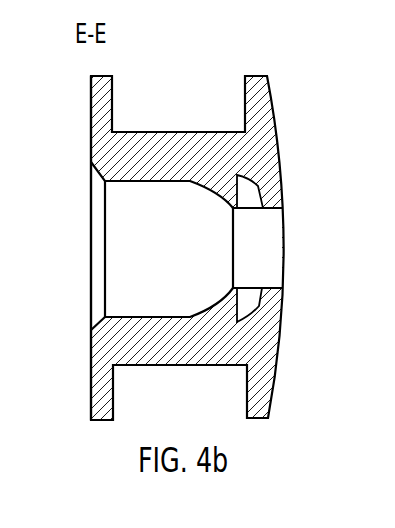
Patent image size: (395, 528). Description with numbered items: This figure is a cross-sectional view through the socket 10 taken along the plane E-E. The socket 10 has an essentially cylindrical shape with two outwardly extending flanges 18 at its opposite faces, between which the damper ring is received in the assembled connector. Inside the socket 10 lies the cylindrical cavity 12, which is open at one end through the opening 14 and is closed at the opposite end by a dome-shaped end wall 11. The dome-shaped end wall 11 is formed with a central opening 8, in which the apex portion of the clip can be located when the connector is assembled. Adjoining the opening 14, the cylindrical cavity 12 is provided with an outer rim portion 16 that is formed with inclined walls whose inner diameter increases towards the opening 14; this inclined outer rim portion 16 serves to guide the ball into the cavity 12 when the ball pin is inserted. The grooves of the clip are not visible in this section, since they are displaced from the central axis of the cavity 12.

The central opening 8 is at (267, 238).
The socket 10 is at (282, 137).
The dome-shaped end wall 11 is at (206, 200).
The cylindrical cavity 12 is at (105, 202).
The opening 14 is at (98, 246).
The outer rim portion 16 is at (95, 324).
The flanges 18 is at (245, 87).